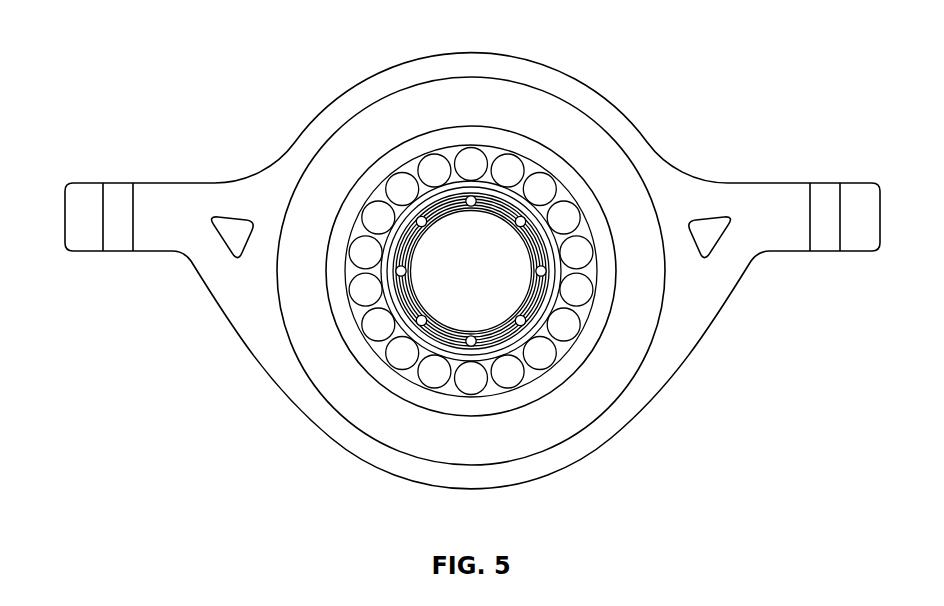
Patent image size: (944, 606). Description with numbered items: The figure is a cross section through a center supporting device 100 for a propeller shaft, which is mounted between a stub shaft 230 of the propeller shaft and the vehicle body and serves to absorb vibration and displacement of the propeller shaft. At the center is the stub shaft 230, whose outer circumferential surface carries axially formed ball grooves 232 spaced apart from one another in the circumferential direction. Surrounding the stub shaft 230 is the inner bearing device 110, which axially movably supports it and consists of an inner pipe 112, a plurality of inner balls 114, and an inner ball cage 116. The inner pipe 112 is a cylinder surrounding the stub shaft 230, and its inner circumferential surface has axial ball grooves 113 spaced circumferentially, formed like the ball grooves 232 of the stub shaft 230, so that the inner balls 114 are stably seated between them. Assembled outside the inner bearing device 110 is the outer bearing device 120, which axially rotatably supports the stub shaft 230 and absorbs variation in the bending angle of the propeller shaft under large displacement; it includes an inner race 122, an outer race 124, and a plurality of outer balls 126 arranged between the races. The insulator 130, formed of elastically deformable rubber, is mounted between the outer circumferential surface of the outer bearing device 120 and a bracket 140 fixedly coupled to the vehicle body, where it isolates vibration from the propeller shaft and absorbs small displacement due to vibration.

The center supporting device 100 is at (228, 131).
The inner bearing device 110 is at (752, 363).
The inner pipe 112 is at (565, 283).
The ball grooves 113 is at (430, 343).
The inner balls 114 is at (540, 330).
The inner ball cage 116 is at (540, 392).
The outer bearing device 120 is at (178, 357).
The inner race 122 is at (347, 326).
The outer race 124 is at (393, 357).
The outer balls 126 is at (383, 273).
The insulator 130 is at (575, 125).
The bracket 140 is at (652, 142).
The stub shaft 230 is at (487, 220).
The ball grooves 232 is at (471, 197).